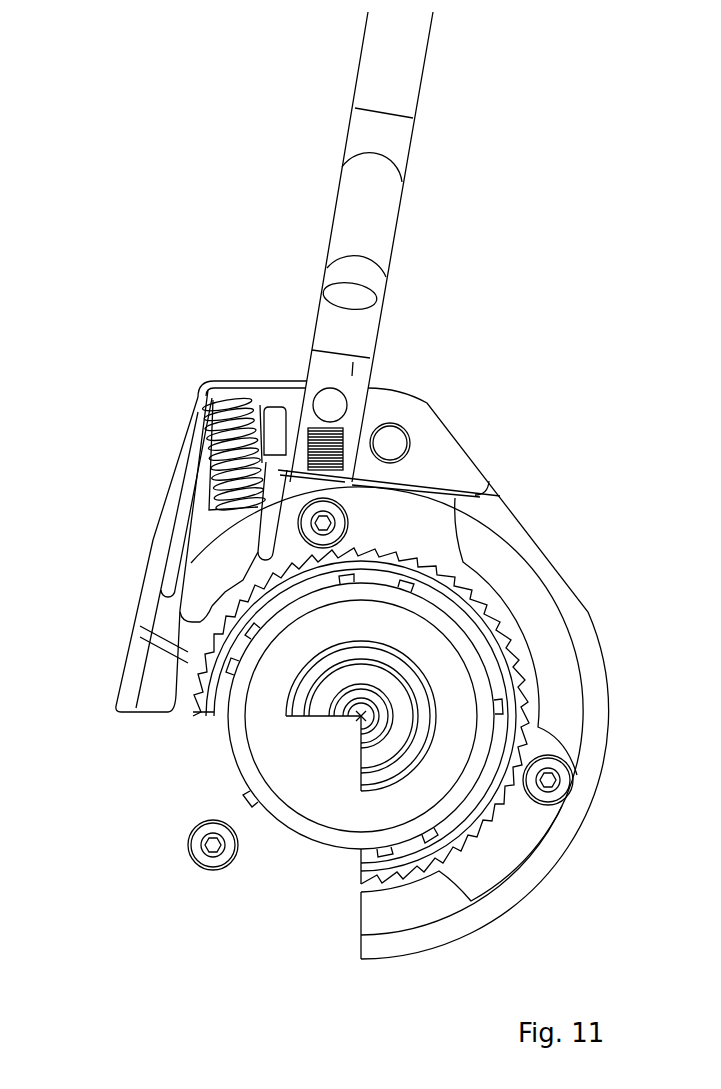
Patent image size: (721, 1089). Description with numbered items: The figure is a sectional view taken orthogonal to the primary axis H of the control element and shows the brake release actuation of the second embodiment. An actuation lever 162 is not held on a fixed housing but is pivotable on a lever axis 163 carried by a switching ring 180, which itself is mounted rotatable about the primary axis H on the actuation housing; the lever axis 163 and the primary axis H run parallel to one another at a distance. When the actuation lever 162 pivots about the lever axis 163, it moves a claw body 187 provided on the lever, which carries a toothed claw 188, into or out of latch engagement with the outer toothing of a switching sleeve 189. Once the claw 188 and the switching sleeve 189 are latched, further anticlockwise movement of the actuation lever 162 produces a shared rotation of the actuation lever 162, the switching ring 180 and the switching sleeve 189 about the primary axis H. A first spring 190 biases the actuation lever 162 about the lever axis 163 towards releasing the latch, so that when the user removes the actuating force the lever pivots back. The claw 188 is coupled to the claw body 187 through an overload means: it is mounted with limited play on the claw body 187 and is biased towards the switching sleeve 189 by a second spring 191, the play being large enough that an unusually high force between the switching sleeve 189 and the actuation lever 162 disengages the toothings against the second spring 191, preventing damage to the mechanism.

The actuation lever 162 is at (398, 144).
The lever axis 163 is at (398, 442).
The switching ring 180 is at (510, 525).
The claw body 187 is at (199, 437).
The claw 188 is at (212, 574).
The switching sleeve 189 is at (218, 650).
The first spring 190 is at (337, 445).
The second spring 191 is at (244, 413).
The primary axis H is at (361, 716).